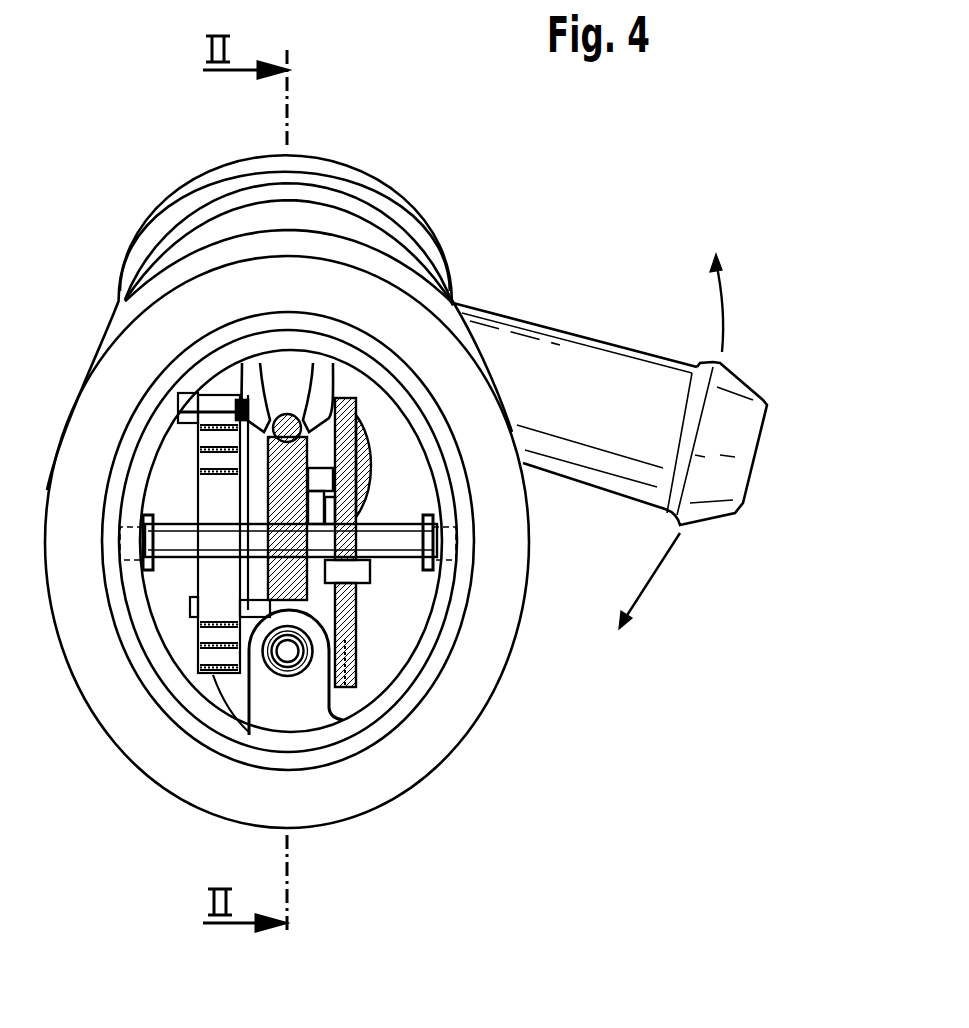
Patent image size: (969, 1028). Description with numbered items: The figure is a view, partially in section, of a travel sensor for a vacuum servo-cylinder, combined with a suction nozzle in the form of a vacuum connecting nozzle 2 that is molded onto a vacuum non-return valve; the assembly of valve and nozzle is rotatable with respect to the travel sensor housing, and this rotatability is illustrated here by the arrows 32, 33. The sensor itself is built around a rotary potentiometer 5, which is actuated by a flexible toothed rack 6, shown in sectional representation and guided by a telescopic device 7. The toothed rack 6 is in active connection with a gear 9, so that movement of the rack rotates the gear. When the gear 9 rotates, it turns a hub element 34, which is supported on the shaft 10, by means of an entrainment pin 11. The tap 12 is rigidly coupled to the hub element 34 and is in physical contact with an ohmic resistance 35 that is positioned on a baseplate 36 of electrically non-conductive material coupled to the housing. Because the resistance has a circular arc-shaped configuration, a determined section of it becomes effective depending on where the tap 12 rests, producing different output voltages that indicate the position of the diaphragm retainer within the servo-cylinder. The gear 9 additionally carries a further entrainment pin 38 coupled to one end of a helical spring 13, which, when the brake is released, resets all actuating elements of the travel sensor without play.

The vacuum connecting nozzle 2 is at (543, 353).
The rotary potentiometer 5 is at (367, 622).
The flexible toothed rack 6 is at (280, 414).
The telescopic device 7 is at (298, 690).
The gear 9 is at (277, 505).
The shaft 10 is at (403, 548).
The entrainment pin 11 is at (315, 468).
The tap 12 is at (365, 462).
The helical spring 13 is at (213, 675).
The arrow 32 is at (647, 590).
The arrow 33 is at (722, 318).
The hub element 34 is at (372, 588).
The ohmic resistance 35 is at (367, 682).
The baseplate 36 is at (343, 690).
The further entrainment pin 38 is at (250, 720).